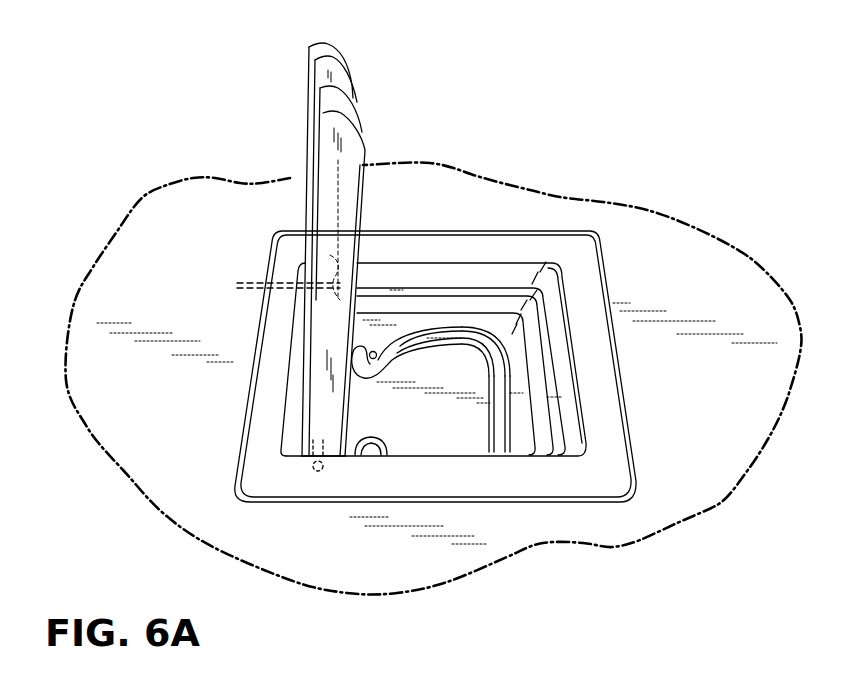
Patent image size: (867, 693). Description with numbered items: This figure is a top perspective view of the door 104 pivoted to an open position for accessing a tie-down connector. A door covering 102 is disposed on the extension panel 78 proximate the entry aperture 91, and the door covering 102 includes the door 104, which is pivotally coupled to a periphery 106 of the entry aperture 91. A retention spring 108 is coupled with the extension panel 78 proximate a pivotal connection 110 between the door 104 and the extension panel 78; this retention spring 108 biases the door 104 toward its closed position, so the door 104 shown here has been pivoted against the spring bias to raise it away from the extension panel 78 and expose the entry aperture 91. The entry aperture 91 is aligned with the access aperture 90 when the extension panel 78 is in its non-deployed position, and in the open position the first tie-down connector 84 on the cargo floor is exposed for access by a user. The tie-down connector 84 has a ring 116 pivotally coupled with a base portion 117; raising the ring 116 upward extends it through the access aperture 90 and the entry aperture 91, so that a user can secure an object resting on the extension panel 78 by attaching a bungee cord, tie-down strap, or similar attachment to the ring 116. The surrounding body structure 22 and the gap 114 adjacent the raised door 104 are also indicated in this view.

The vehicle body panel 22 is at (557, 413).
The extension panel 78 is at (168, 306).
The first tie-down connector 84 is at (435, 429).
The access aperture 90 is at (532, 385).
The entry aperture 91 is at (551, 316).
The door covering 102 is at (503, 247).
The door 104 is at (350, 152).
The periphery 106 is at (463, 243).
The retention spring 108 is at (237, 283).
The pivotal connection 110 is at (305, 250).
The gap 114 is at (302, 352).
The ring 116 is at (493, 403).
The base portion 117 is at (400, 410).